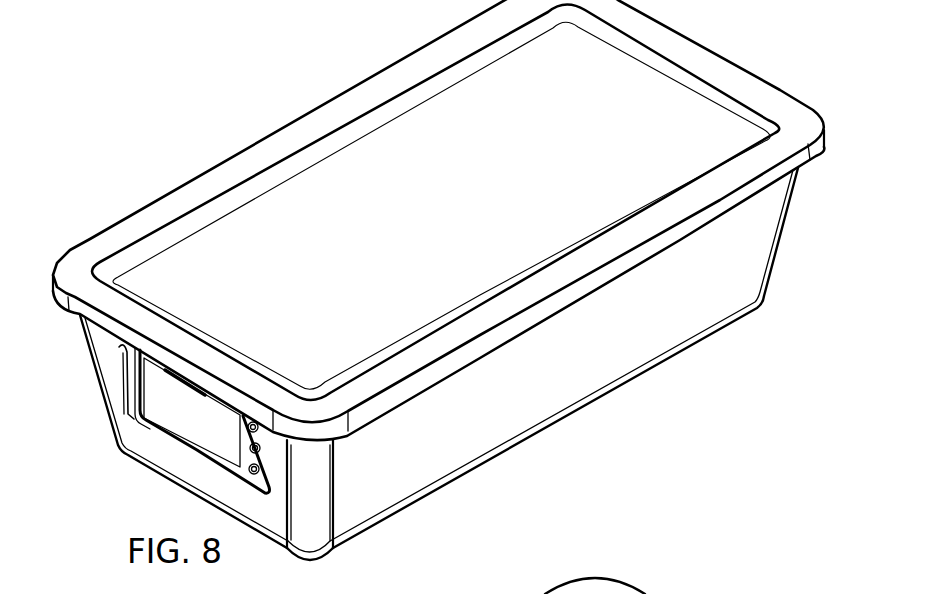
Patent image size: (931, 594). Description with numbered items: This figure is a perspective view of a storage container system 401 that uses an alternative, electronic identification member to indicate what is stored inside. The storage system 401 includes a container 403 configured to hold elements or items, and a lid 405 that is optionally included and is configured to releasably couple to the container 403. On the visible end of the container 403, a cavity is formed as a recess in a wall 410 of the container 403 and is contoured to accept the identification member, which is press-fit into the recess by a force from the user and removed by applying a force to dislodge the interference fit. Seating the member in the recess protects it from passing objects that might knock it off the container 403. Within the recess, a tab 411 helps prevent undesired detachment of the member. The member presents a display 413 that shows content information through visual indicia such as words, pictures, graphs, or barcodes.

The storage system 401 is at (92, 77).
The container 403 is at (550, 398).
The lid 405 is at (440, 271).
The wall 410 is at (272, 514).
The tab 411 is at (120, 379).
The display 413 is at (203, 424).